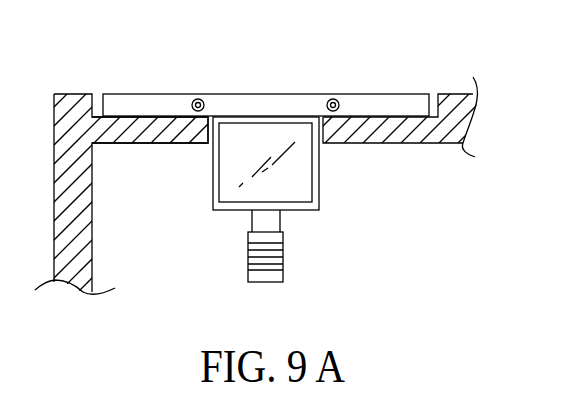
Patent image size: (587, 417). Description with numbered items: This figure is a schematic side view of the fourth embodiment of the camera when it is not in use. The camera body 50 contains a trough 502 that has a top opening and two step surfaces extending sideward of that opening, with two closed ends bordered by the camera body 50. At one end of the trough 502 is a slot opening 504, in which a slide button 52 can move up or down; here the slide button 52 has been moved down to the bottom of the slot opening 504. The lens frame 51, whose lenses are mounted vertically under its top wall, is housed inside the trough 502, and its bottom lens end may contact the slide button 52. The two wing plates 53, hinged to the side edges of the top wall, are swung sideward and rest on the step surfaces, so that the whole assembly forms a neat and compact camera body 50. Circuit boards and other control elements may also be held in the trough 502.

The camera body 50 is at (462, 95).
The trough 502 is at (208, 147).
The wing plates 53 is at (152, 100).
The lens frame 51 is at (260, 135).
The slot opening 504 is at (273, 222).
The slide button 52 is at (272, 262).